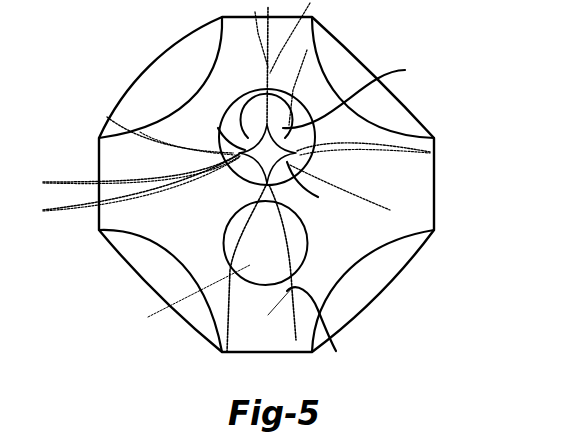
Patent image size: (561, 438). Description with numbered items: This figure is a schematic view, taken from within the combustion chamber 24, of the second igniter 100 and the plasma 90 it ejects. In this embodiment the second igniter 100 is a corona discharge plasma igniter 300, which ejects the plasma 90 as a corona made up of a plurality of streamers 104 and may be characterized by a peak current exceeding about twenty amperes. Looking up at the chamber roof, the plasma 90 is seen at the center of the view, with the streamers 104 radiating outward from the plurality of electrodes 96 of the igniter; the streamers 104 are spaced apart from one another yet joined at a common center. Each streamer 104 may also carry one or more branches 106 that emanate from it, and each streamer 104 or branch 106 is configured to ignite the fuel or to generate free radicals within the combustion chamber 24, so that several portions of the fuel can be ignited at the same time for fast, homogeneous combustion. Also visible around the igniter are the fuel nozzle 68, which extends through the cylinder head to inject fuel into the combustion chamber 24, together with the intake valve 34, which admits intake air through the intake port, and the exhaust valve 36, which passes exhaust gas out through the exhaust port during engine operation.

The combustion chamber 24 is at (108, 44).
The intake valve 34 is at (170, 78).
The exhaust valve 36 is at (117, 262).
The fuel nozzle 68 is at (257, 286).
The plasma 90 is at (380, 152).
The plurality of electrodes 96 is at (218, 128).
The second igniter 100 is at (380, 94).
The corona discharge plasma igniter 300 is at (405, 70).
The plurality of streamers 104 is at (268, 80).
The branches 106 is at (113, 182).